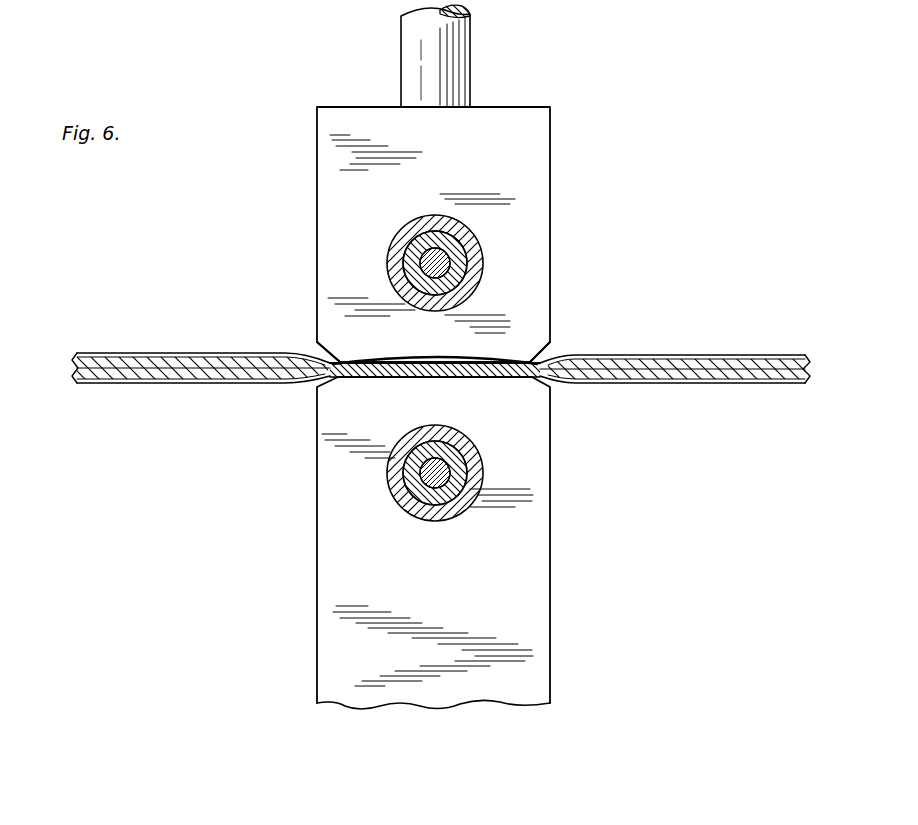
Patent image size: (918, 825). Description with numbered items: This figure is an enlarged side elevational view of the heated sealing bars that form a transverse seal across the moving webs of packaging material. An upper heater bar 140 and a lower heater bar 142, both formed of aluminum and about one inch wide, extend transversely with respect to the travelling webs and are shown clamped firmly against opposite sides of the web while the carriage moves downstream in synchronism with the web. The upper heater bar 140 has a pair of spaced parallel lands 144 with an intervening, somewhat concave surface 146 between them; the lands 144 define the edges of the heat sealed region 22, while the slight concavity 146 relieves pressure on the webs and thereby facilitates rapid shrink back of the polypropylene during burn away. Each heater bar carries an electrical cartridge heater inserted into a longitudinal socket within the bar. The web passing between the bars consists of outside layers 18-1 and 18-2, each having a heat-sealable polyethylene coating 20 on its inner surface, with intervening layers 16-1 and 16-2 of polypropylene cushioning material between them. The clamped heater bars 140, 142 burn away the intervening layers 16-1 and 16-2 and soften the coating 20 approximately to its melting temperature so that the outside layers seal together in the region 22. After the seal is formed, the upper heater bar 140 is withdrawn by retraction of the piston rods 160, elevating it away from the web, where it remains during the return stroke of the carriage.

The piston rod 160 is at (470, 62).
The upper heater bar 140 is at (553, 250).
The lower heater bar 142 is at (540, 530).
The parallel lands 144 is at (345, 360).
The concave surface 146 is at (465, 352).
The heat sealed region 22 is at (495, 352).
The polyethylene coating 20 is at (365, 360).
The outside layer 18-1 is at (665, 355).
The outside layer 18-2 is at (650, 383).
The intervening layer of cushioning material 16-1 is at (757, 355).
The intervening layer of cushioning material 16-2 is at (738, 383).